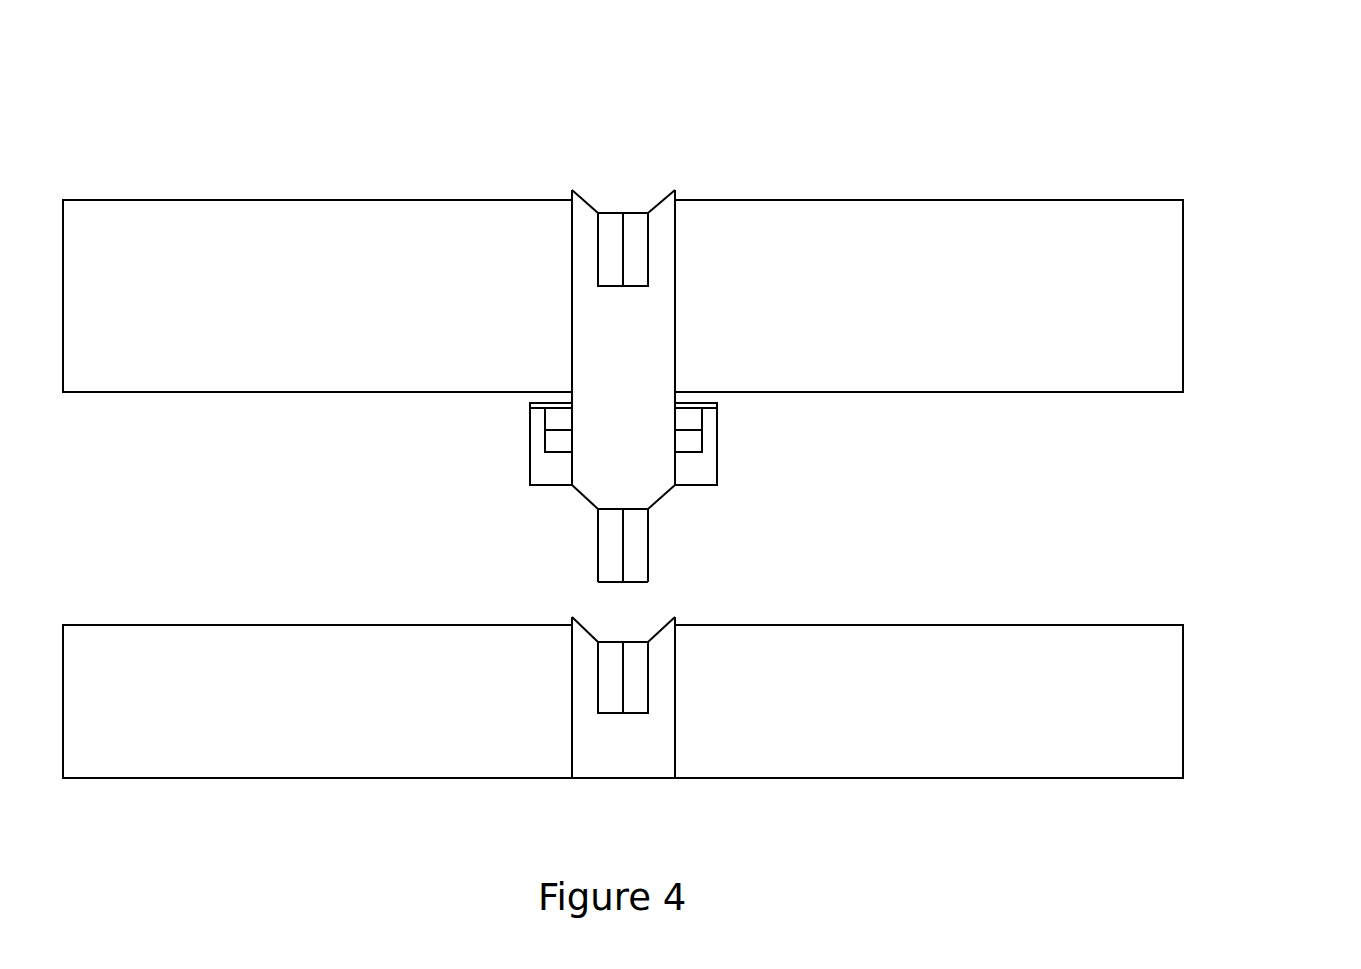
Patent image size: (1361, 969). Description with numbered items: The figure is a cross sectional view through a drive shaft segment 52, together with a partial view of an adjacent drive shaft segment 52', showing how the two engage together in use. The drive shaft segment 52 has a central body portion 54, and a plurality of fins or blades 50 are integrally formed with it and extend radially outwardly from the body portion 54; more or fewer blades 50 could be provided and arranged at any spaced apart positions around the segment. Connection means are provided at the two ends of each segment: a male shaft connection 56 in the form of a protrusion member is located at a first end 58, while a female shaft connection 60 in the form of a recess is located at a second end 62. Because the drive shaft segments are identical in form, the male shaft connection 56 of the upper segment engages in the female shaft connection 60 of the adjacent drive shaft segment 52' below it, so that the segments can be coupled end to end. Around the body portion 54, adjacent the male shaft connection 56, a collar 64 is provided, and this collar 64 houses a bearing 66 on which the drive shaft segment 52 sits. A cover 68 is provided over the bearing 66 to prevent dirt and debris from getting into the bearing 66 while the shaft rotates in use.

The blades 50 is at (328, 245).
The drive shaft segment 52 is at (623, 209).
The adjacent drive shaft segment 52' is at (702, 660).
The body portion 54 is at (645, 340).
The male shaft connection 56 is at (593, 523).
The first end 58 is at (603, 587).
The female shaft connection 60 is at (638, 190).
The second end 62 is at (578, 188).
The collar 64 is at (720, 472).
The bearing 66 is at (693, 418).
The cover 68 is at (552, 398).